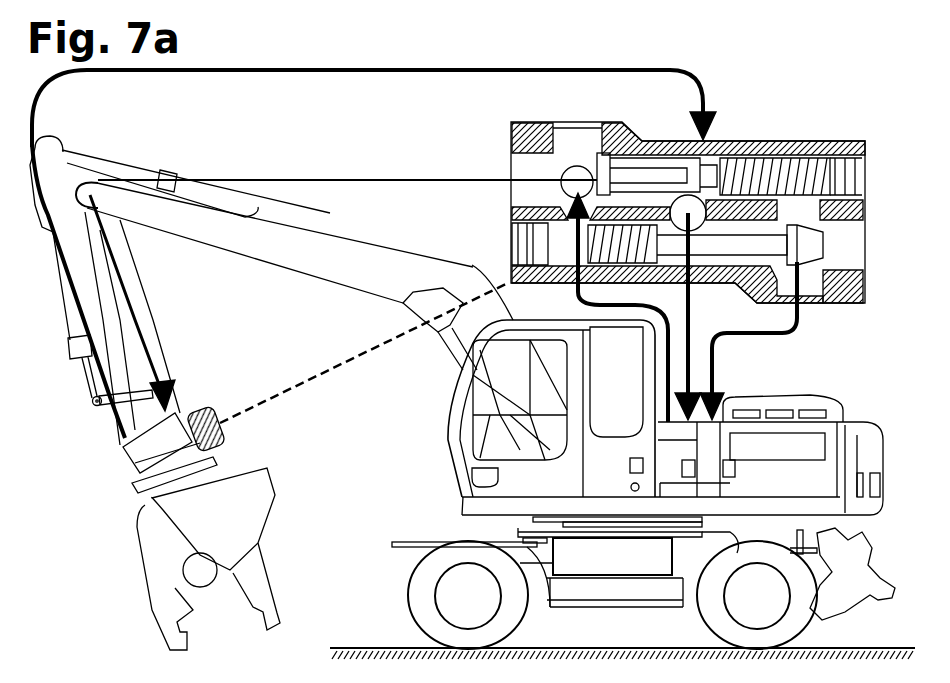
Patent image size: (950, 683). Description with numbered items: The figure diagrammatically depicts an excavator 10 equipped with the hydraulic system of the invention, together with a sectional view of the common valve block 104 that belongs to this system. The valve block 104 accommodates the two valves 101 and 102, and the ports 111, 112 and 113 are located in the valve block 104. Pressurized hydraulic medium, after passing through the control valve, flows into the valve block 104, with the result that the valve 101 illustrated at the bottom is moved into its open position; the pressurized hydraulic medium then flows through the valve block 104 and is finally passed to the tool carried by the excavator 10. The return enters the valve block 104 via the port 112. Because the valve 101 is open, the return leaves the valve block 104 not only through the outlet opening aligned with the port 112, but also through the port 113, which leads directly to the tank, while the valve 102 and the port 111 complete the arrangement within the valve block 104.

The working machine (material handler) 10 is at (882, 464).
The valve 101 is at (740, 257).
The valve 102 is at (697, 163).
The valve block 104 is at (791, 142).
The port 111 is at (577, 170).
The port 112 is at (797, 228).
The port 113 is at (688, 205).